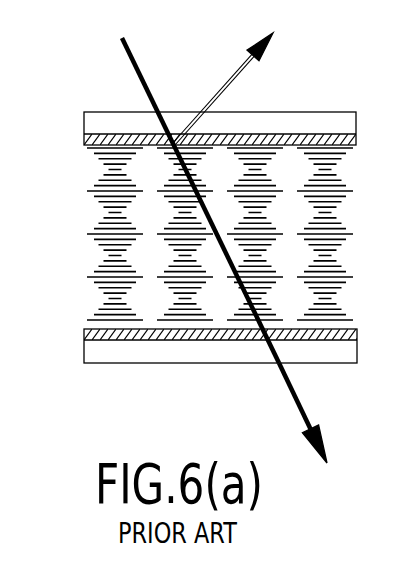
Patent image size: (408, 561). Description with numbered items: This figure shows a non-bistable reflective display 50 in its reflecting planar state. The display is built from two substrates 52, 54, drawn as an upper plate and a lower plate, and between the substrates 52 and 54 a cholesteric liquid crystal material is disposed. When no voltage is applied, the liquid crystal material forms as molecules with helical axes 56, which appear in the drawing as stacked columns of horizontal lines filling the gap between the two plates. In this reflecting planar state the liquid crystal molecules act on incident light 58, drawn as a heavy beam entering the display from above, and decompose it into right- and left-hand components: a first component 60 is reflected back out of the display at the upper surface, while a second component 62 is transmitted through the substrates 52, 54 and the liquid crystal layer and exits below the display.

The non-bistable reflective display 50 is at (197, 198).
The substrate 52 is at (84, 125).
The substrate 54 is at (84, 350).
The helical axes 56 is at (96, 184).
The incident light 58 is at (127, 43).
The first component 60 is at (242, 68).
The second component 62 is at (302, 395).